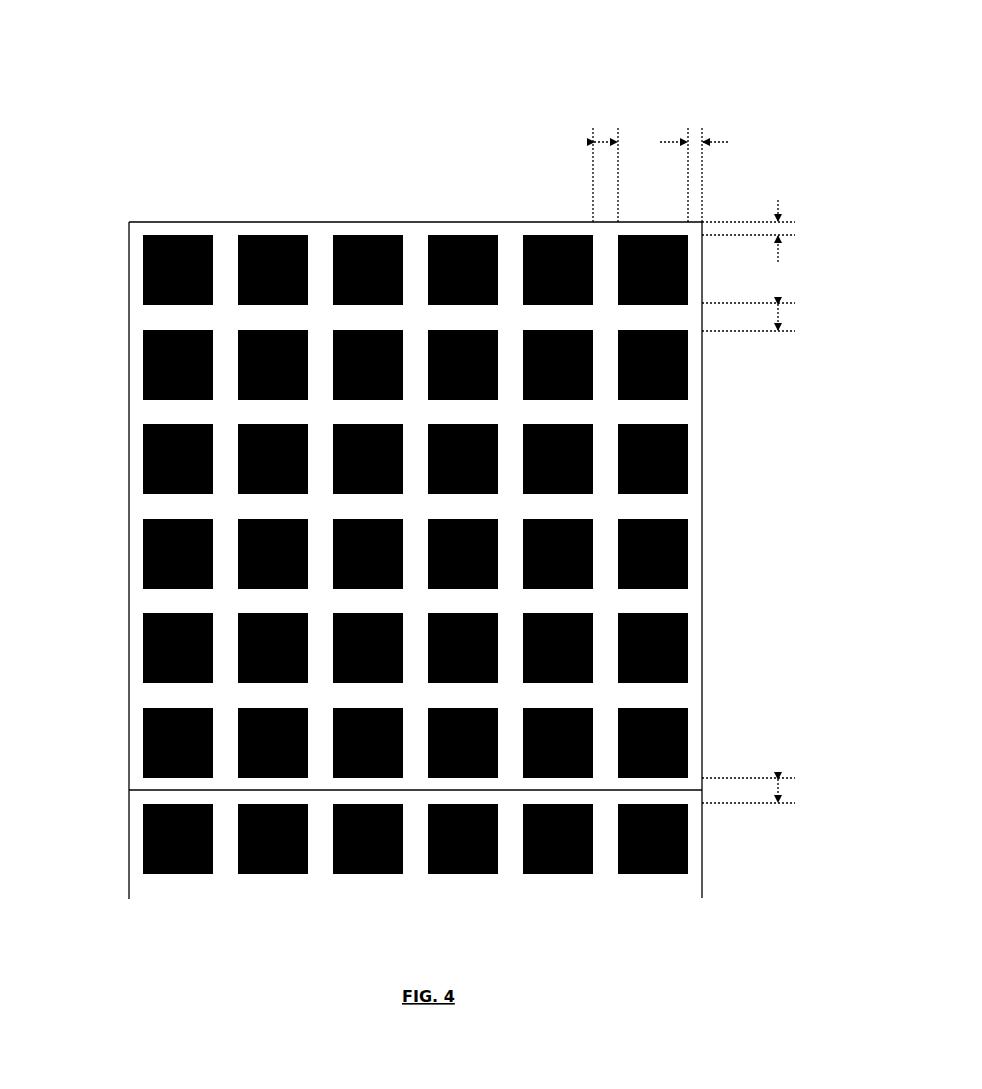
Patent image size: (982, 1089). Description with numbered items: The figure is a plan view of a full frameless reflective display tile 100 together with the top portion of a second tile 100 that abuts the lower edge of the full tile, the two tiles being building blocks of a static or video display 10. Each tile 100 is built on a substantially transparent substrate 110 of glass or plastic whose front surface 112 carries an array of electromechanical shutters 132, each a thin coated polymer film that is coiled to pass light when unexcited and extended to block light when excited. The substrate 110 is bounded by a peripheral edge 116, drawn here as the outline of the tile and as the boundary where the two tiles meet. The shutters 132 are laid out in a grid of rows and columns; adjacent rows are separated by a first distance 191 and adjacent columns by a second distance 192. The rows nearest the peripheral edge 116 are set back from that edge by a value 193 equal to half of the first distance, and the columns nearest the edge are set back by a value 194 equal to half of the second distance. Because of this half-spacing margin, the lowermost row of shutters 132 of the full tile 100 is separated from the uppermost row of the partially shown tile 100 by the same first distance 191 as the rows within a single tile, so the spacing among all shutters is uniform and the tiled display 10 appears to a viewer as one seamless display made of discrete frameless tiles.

The static or video display 10 is at (489, 497).
The reflective display tile 100 is at (346, 488).
The substrate 110 is at (692, 505).
The front surface 112 is at (597, 595).
The peripheral edge 116 is at (702, 437).
The electromechanical shutter 132 is at (367, 248).
The first distance 191 is at (779, 316).
The second distance 192 is at (605, 138).
The row edge spacing value 193 is at (778, 200).
The column edge spacing value 194 is at (723, 140).